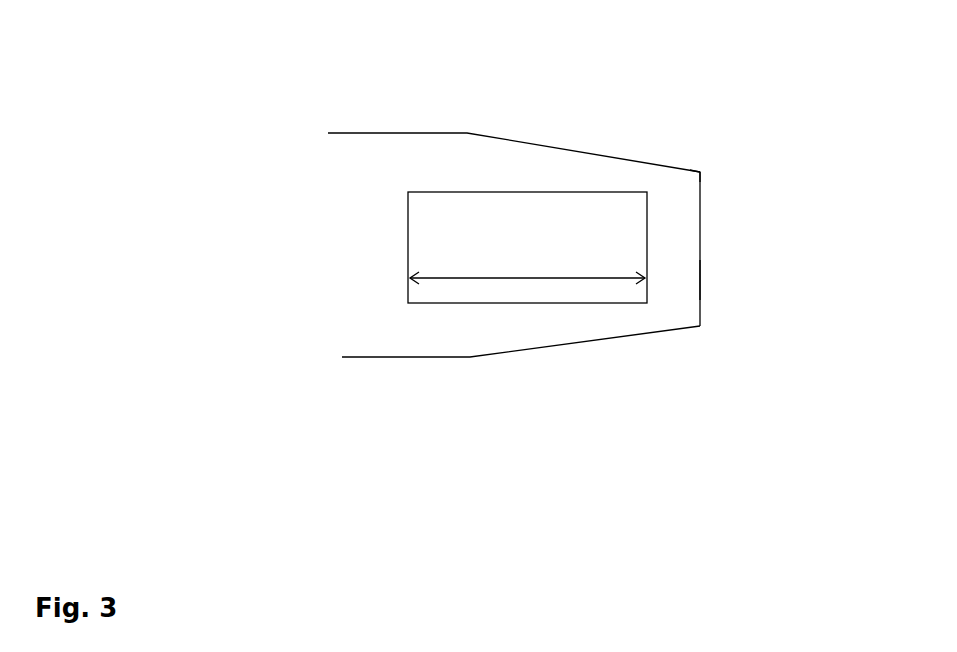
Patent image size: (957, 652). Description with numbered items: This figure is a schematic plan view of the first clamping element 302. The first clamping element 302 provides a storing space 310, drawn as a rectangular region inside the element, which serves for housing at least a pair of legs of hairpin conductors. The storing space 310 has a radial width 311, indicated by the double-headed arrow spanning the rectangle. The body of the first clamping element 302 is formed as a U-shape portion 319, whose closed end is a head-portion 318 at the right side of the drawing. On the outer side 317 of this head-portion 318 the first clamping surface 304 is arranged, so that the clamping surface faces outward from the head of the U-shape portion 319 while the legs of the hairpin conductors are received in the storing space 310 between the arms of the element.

The first clamping element 302 is at (369, 163).
The first clamping surface 304 is at (703, 215).
The storing space 310 is at (537, 247).
The radial width 311 is at (480, 278).
The outer side 317 is at (723, 280).
The head-portion 318 is at (685, 187).
The U-shape portion 319 is at (621, 361).